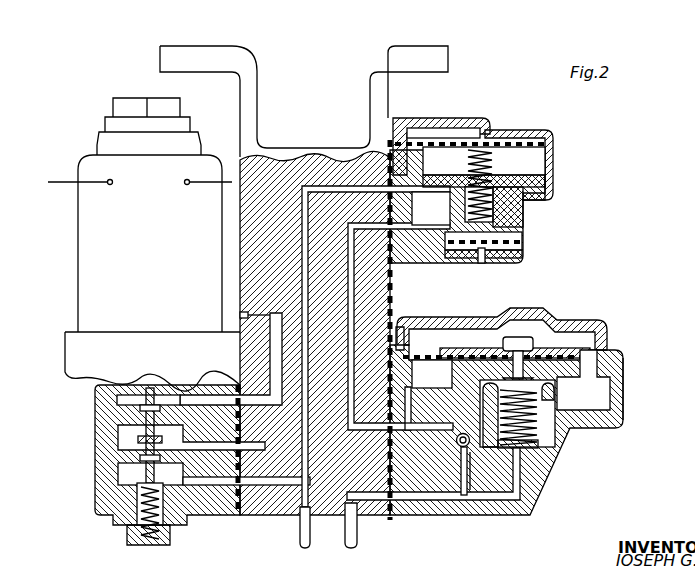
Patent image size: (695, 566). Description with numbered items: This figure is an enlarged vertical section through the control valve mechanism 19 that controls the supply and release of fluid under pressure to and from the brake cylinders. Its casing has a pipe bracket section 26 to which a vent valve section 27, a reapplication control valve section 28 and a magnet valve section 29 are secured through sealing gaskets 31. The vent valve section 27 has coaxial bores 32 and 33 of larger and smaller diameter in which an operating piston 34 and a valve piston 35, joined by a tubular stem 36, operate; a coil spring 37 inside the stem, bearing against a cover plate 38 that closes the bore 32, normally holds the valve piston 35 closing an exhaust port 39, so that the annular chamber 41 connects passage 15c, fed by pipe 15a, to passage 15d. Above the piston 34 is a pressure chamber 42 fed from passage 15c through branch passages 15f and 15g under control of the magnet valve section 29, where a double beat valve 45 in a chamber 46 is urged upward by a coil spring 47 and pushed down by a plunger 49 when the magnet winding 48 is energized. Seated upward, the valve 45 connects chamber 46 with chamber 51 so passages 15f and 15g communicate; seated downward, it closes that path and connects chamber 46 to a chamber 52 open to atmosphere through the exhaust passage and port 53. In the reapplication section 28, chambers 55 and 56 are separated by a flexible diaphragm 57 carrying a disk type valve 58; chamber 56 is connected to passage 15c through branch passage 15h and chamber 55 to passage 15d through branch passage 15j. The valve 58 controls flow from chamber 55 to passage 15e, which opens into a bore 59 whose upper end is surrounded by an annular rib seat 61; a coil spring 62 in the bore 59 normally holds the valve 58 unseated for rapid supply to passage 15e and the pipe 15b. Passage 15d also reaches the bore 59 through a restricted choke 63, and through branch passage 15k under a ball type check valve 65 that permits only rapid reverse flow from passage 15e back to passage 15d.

The control valve mechanism 19 is at (213, 46).
The pipe bracket section 26 is at (300, 157).
The vent valve section 27 is at (552, 168).
The reapplication control valve section 28 is at (622, 410).
The magnet valve section 29 is at (72, 353).
The sealing gaskets 31 is at (392, 128).
The bore 32 is at (543, 136).
The bore 33 is at (522, 238).
The operating piston 34 is at (548, 177).
The valve piston 35 is at (514, 254).
The tubular stem 36 is at (546, 203).
The coil spring 37 is at (478, 150).
The cover plate 38 is at (435, 118).
The exhaust port 39 is at (481, 258).
The annular chamber 41 is at (523, 217).
The pressure chamber 42 is at (508, 150).
The double beat valve 45 is at (150, 442).
The chamber 46 is at (120, 432).
The coil spring 47 is at (127, 535).
The magnet winding 48 is at (88, 246).
The plunger 49 is at (96, 395).
The chamber 51 is at (118, 476).
The chamber 52 is at (150, 398).
The exhaust passage and port 53 is at (240, 314).
The chamber 55 is at (624, 382).
The chamber 56 is at (548, 325).
The flexible diaphragm 57 is at (598, 355).
The disk type valve 58 is at (583, 381).
The bore 59 is at (526, 440).
The annular rib seat 61 is at (549, 397).
The coil spring 62 is at (538, 460).
The choke 63 is at (483, 471).
The check valve 65 is at (456, 443).
The pipe 15a is at (300, 546).
The pipe 15b is at (357, 540).
The passage 15c is at (345, 186).
The passage 15d is at (352, 282).
The passage 15e is at (505, 500).
The branch passage 15f is at (271, 486).
The branch passage 15g is at (240, 160).
The branch passage 15h is at (400, 350).
The branch passage 15j is at (418, 412).
The branch passage 15k is at (463, 480).